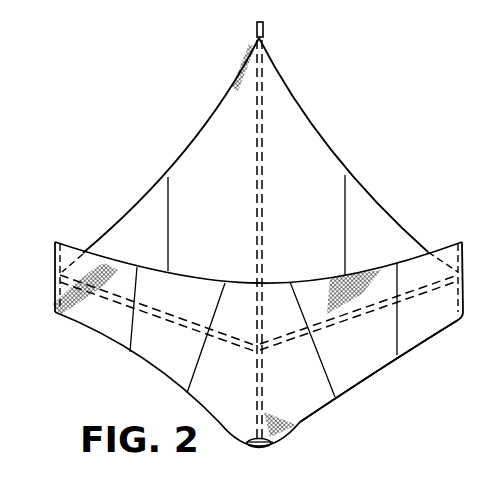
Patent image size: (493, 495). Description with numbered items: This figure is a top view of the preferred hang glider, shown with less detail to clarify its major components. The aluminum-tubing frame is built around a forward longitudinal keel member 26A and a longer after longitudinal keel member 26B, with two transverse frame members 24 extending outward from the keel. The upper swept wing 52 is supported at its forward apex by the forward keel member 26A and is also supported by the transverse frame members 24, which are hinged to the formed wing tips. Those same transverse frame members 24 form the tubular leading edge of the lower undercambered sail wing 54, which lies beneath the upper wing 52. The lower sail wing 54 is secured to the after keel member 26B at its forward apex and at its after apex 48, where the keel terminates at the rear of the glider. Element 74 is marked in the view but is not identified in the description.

The transverse frame members 24 is at (405, 294).
The forward longitudinal keel member 26A is at (262, 357).
The after longitudinal keel member 26B is at (261, 187).
The after apex 48 is at (223, 34).
The upper swept wing 52 is at (347, 342).
The lower undercambered sail wing 54 is at (330, 211).
The sail luff edge 74 is at (157, 183).